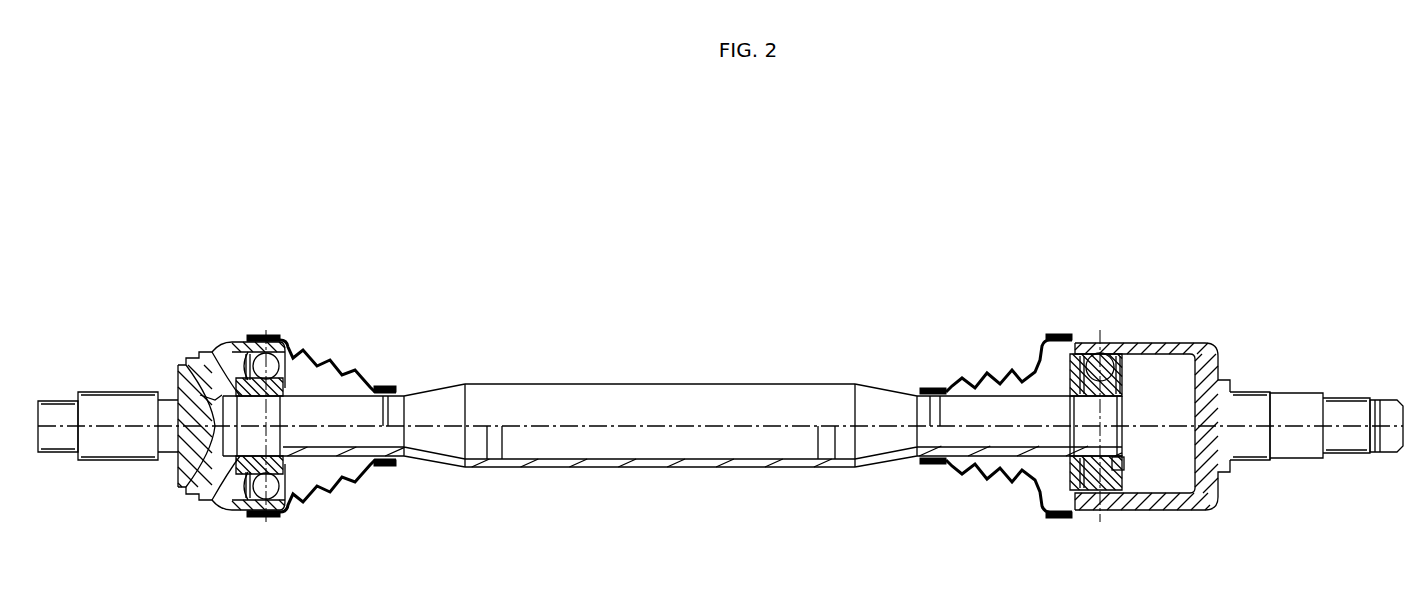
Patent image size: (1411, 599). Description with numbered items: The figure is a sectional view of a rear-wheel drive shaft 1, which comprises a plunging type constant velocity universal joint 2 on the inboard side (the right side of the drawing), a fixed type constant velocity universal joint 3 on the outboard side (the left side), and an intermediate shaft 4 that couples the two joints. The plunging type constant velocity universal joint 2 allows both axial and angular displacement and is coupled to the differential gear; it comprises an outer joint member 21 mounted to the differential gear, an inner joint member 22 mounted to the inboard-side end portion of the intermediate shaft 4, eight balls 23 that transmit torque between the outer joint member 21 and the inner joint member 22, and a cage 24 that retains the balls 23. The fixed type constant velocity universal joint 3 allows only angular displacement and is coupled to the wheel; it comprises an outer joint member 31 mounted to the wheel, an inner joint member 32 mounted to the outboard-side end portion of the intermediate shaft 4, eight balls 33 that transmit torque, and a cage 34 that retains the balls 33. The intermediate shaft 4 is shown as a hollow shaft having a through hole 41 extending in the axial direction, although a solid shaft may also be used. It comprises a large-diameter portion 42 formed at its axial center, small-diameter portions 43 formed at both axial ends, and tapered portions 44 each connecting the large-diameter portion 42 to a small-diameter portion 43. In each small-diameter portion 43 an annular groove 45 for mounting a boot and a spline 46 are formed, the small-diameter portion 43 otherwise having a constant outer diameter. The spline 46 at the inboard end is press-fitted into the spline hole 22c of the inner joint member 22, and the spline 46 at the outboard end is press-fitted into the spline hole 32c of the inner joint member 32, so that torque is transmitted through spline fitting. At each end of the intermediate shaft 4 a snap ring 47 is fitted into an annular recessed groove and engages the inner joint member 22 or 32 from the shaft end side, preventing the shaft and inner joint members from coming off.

The rear-wheel drive shaft 1 is at (810, 246).
The plunging type constant velocity universal joint 2 is at (1125, 334).
The outer joint member 21 is at (1165, 343).
The inner joint member 22 is at (1092, 490).
The spline hole 22c is at (1072, 410).
The balls 23 is at (1096, 352).
The cage 24 is at (1122, 490).
The fixed type constant velocity universal joint 3 is at (270, 316).
The outer joint member 31 is at (219, 341).
The inner joint member 32 is at (293, 500).
The spline hole 32c is at (280, 410).
The balls 33 is at (275, 350).
The cage 34 is at (229, 512).
The intermediate shaft 4 is at (692, 380).
The through hole 41 is at (672, 458).
The large-diameter portion 42 is at (742, 470).
The small-diameter portions 43 is at (365, 476).
The tapered portions 44 is at (428, 466).
The annular groove 45 is at (384, 386).
The spline 46 is at (242, 340).
The snap ring 47 is at (215, 400).